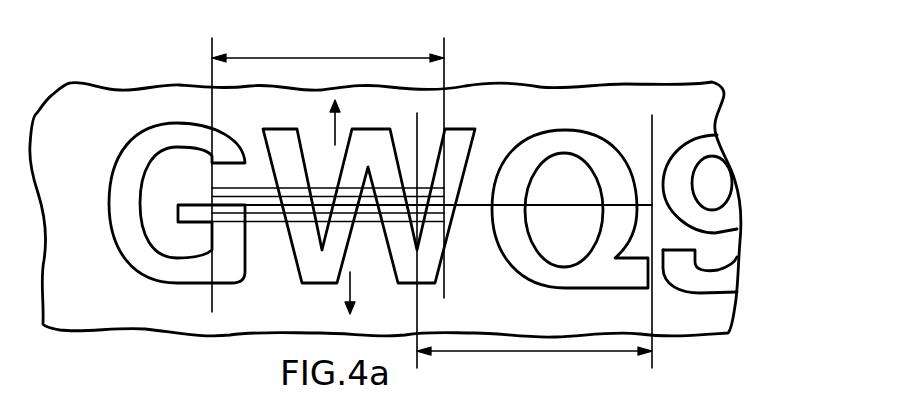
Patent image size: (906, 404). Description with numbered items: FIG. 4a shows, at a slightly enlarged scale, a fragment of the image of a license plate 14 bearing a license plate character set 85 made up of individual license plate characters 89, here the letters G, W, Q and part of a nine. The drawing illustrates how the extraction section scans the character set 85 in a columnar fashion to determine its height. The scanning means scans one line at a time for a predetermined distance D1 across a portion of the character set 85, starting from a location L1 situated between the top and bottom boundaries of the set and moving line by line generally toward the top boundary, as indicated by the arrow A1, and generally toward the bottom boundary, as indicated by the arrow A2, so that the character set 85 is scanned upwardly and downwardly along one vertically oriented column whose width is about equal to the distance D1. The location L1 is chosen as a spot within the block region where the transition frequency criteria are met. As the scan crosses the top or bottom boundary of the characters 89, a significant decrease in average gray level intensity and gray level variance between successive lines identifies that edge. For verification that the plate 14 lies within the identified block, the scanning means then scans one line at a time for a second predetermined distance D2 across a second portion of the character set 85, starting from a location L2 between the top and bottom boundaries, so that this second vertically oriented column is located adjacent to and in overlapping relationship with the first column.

The license plate 14 is at (712, 82).
The license plate character set 85 is at (394, 210).
The license plate characters 89 is at (460, 130).
The scan start location L1 is at (247, 192).
The second scan start location L2 is at (581, 206).
The upward scanning direction arrow A1 is at (333, 128).
The downward scanning direction arrow A2 is at (352, 293).
The first predetermined scan distance D1 is at (347, 57).
The second predetermined scan distance D2 is at (557, 353).